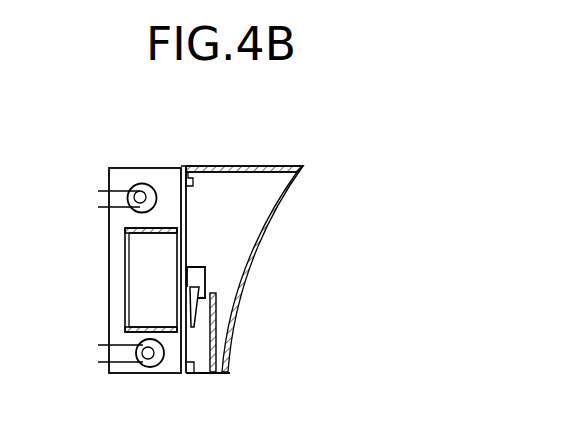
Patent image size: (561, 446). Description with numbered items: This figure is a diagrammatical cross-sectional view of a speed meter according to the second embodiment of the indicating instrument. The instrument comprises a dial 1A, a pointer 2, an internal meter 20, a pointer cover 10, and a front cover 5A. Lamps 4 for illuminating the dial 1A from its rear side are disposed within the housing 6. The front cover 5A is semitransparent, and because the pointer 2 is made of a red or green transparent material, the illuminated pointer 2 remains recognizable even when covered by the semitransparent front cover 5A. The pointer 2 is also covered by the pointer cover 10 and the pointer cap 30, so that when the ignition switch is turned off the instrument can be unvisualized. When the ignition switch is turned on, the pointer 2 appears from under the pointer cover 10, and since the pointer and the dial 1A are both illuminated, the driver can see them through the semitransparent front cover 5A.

The housing 6 is at (144, 168).
The dial 1A is at (186, 197).
The lamps 4 is at (128, 190).
The internal meter 20 is at (135, 300).
The front cover 5A is at (270, 210).
The pointer cap 30 is at (205, 272).
The pointer 2 is at (197, 312).
The pointer cover 10 is at (217, 305).